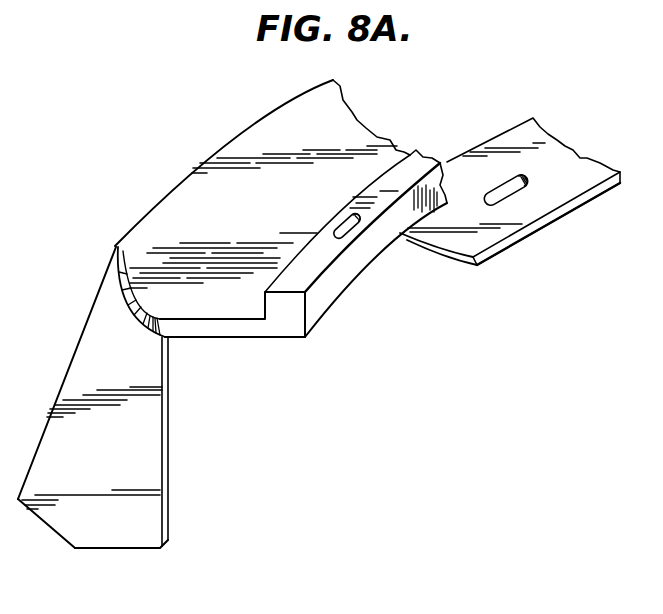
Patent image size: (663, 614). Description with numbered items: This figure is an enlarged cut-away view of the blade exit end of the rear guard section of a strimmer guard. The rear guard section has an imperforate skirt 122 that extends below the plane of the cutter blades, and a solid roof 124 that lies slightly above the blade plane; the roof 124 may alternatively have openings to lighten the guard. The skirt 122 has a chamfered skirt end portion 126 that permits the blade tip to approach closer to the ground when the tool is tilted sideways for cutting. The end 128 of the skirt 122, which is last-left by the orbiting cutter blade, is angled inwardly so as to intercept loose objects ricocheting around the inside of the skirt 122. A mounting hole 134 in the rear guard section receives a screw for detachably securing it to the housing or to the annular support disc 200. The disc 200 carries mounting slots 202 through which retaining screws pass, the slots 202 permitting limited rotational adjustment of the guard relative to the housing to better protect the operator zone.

The skirt 122 is at (78, 350).
The roof 124 is at (178, 201).
The chamfered skirt end portion 126 is at (50, 530).
The end of skirt 128 is at (125, 516).
The mounting hole 134 is at (338, 229).
The annular support disc 200 is at (457, 238).
The mounting slot 202 is at (506, 196).